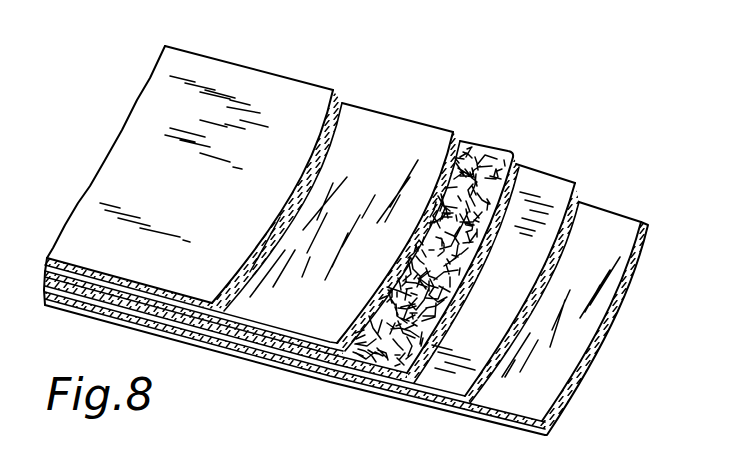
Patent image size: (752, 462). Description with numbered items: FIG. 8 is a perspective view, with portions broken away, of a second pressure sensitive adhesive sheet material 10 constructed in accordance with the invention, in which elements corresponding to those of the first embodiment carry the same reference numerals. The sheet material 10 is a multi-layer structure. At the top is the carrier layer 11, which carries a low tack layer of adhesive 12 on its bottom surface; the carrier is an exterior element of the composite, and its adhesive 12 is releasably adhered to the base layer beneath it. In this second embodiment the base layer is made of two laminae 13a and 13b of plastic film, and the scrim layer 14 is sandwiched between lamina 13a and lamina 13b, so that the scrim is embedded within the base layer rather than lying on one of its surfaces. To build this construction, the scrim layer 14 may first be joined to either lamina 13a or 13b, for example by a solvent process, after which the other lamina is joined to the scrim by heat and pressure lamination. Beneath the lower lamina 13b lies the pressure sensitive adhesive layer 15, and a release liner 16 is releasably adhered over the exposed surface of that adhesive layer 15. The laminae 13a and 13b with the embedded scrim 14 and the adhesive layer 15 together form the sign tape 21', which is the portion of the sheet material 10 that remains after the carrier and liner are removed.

The pressure sensitive adhesive sheet material 10 is at (318, 70).
The carrier layer 11 is at (250, 78).
The layer of adhesive 12 is at (334, 106).
The lamina 13a is at (418, 135).
The scrim layer 14 is at (507, 157).
The lamina 13b is at (552, 185).
The pressure sensitive adhesive layer 15 is at (583, 230).
The release liner 16 is at (610, 243).
The sign tape 21' is at (294, 356).